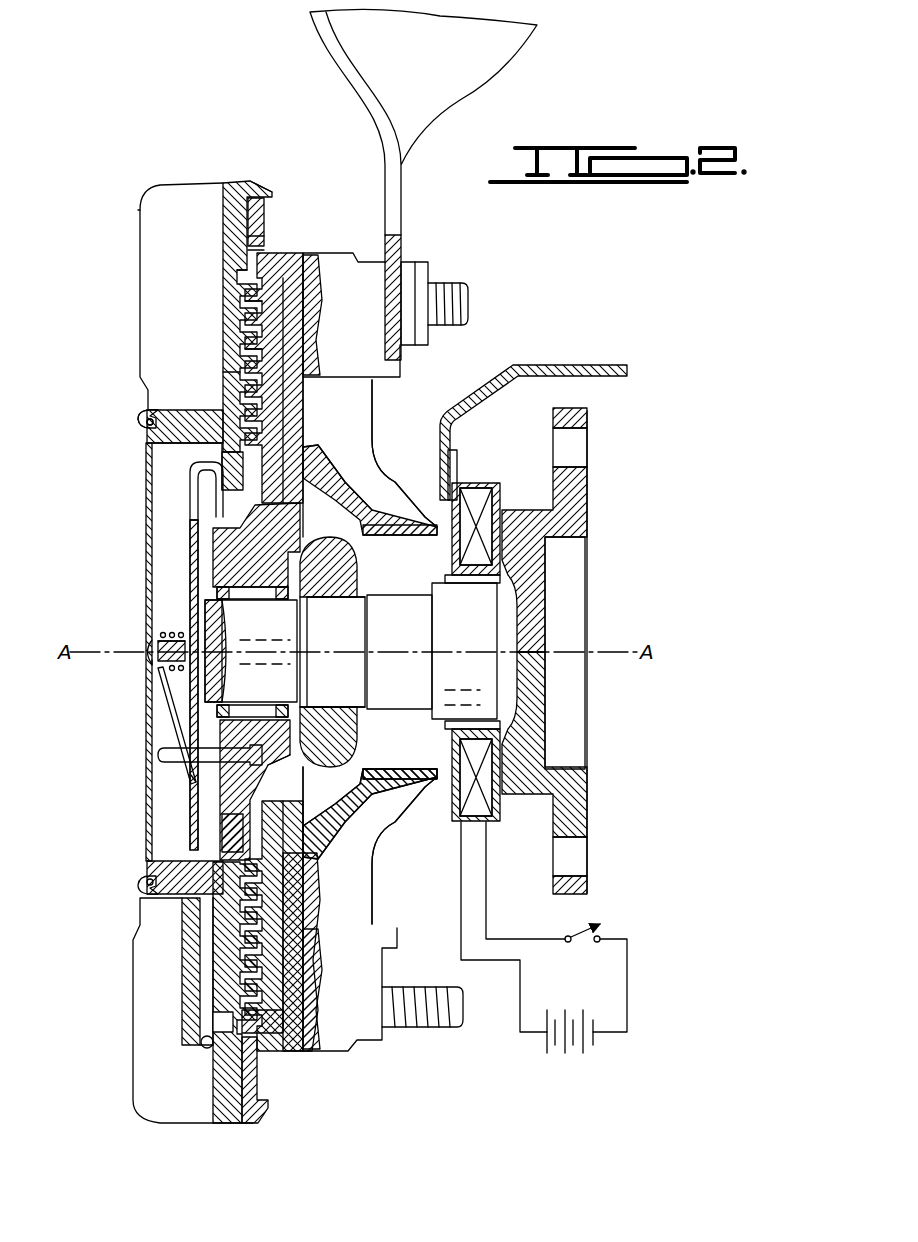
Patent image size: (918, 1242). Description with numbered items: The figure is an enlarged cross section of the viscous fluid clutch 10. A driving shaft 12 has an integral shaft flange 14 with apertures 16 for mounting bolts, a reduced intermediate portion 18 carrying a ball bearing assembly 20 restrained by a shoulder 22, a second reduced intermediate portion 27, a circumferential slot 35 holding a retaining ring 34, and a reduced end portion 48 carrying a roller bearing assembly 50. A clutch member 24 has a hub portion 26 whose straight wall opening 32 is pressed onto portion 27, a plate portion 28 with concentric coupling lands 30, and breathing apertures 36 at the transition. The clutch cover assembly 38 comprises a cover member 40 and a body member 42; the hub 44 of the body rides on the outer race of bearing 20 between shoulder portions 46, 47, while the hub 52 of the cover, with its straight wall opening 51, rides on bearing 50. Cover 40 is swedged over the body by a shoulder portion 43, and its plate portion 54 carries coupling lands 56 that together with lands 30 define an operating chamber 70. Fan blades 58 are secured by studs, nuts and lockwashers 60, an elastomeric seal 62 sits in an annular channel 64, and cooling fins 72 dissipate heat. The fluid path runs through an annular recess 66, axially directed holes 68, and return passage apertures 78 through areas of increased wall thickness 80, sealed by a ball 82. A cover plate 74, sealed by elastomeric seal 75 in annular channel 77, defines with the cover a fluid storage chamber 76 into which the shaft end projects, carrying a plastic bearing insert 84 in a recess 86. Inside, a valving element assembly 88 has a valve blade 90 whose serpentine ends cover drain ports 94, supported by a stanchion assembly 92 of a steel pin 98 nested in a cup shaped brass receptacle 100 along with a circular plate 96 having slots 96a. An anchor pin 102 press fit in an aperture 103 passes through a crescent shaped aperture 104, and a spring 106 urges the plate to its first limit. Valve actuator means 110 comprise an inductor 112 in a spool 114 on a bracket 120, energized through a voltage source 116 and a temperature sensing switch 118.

The viscous fluid clutch 10 is at (147, 166).
The driving shaft 12 is at (592, 593).
The shaft flange 14 is at (590, 795).
The apertures 16 is at (572, 452).
The reduced intermediate portion 18 is at (410, 632).
The ball bearing assembly 20 is at (392, 735).
The shoulder 22 is at (440, 600).
The clutch member 24 is at (272, 268).
The hub portion 26 is at (305, 742).
The second reduced intermediate portion 27 is at (343, 646).
The plate portion 28 is at (303, 322).
The coupling lands 30 is at (300, 365).
The straight wall opening 32 is at (318, 592).
The retaining ring 34 is at (336, 610).
The circumferential slot 35 is at (308, 676).
The breathing apertures 36 is at (282, 524).
The clutch cover assembly 38 is at (258, 181).
The cover member 40 is at (140, 213).
The body member 42 is at (265, 208).
The shoulder portion 43 is at (272, 192).
The hub 44 is at (394, 453).
The shoulder portion 46 is at (370, 795).
The shoulder portion 47 is at (295, 780).
The reduced end portion 48 is at (278, 640).
The roller bearing assembly 50 is at (262, 708).
The straight wall opening 51 is at (268, 595).
The hub 52 is at (256, 545).
The plate portion 54 is at (235, 372).
The coupling lands 56 is at (247, 300).
The fan blades 58 is at (440, 56).
The studs, nuts and lockwashers 60 is at (435, 285).
The elastomeric seal 62 is at (252, 252).
The annular channel 64 is at (250, 240).
The annular recess 66 is at (237, 275).
The axially directed holes 68 is at (213, 1022).
The operating chamber 70 is at (262, 348).
The cooling fins 72 is at (135, 938).
The cover plate 74 is at (150, 470).
The elastomeric seal 75 is at (147, 430).
The fluid storage chamber 76 is at (160, 546).
The annular channel 77 is at (140, 412).
The return passage apertures 78 is at (200, 945).
The areas of increased wall thickness 80 is at (200, 968).
The ball 82 is at (207, 1050).
The plastic bearing insert 84 is at (225, 622).
The recess 86 is at (232, 665).
The valving element assembly 88 is at (178, 632).
The valve blade 90 is at (190, 495).
The stanchion assembly 92 is at (147, 660).
The drain ports 94 is at (230, 468).
The circular plate 96 is at (190, 815).
The slots 96a is at (190, 520).
The steel pin 98 is at (150, 650).
The cup shaped brass receptacle 100 is at (165, 640).
The anchor pin 102 is at (160, 753).
The aperture 103 is at (268, 768).
The crescent shaped aperture 104 is at (185, 770).
The spring 106 is at (162, 700).
The valve actuator means 110 is at (632, 985).
The inductor 112 is at (470, 490).
The spool 114 is at (500, 495).
The voltage source 116 is at (590, 1050).
The switch 118 is at (565, 945).
The bracket 120 is at (585, 368).